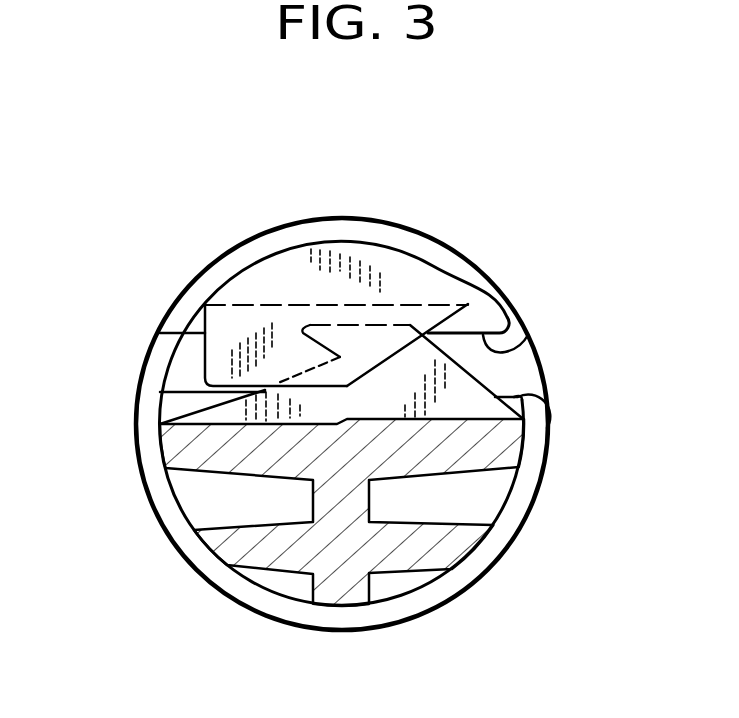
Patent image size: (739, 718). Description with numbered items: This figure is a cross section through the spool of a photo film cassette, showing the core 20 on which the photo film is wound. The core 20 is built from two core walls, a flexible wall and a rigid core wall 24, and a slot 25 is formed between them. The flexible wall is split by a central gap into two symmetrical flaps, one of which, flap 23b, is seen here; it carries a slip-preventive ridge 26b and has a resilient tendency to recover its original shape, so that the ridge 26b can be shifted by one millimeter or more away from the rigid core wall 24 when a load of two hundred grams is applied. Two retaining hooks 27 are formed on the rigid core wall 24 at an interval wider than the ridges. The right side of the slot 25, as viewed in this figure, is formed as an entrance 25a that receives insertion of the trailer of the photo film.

The core 20 is at (188, 241).
The flap 23b is at (339, 218).
The rigid core wall 24 is at (470, 537).
The slot 25 is at (170, 375).
The entrance 25a is at (517, 345).
The slip-preventive ridge 26b is at (233, 340).
The retaining hook 27 is at (457, 393).